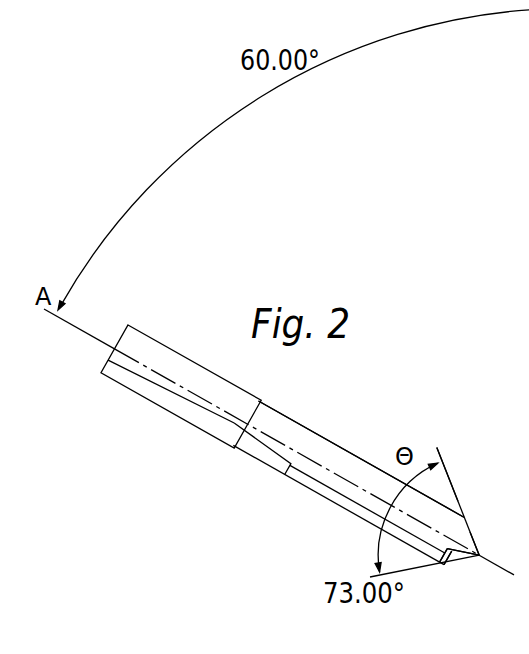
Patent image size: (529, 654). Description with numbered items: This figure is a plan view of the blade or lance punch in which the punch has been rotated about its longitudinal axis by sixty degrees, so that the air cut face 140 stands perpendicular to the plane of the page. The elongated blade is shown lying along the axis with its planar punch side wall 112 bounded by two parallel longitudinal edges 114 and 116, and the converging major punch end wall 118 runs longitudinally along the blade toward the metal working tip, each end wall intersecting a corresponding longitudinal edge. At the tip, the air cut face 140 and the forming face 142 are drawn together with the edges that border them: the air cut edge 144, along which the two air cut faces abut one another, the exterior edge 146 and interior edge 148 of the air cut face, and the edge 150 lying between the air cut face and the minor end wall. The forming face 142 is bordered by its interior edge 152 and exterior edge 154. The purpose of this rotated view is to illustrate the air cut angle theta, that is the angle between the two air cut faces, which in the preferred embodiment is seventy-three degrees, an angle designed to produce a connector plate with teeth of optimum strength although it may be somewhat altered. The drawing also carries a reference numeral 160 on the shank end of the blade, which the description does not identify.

The planar punch side wall 112 is at (333, 444).
The longitudinal edge 114 is at (295, 462).
The longitudinal edge 116 is at (308, 429).
The major punch end wall 118 is at (322, 480).
The air cut face 140 is at (528, 634).
The forming face 142 is at (469, 560).
The air cut edge 144 is at (484, 557).
The exterior edge 146 is at (481, 550).
The interior edge 148 is at (477, 527).
The edge 150 is at (524, 466).
The interior edge 152 is at (446, 565).
The exterior edge 154 is at (459, 567).
The sleeve 160 is at (178, 421).